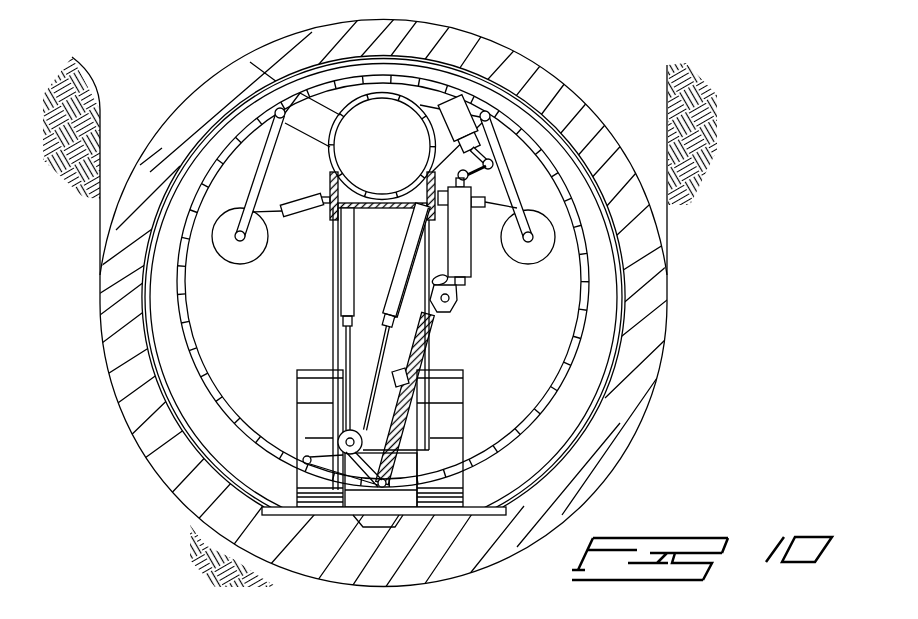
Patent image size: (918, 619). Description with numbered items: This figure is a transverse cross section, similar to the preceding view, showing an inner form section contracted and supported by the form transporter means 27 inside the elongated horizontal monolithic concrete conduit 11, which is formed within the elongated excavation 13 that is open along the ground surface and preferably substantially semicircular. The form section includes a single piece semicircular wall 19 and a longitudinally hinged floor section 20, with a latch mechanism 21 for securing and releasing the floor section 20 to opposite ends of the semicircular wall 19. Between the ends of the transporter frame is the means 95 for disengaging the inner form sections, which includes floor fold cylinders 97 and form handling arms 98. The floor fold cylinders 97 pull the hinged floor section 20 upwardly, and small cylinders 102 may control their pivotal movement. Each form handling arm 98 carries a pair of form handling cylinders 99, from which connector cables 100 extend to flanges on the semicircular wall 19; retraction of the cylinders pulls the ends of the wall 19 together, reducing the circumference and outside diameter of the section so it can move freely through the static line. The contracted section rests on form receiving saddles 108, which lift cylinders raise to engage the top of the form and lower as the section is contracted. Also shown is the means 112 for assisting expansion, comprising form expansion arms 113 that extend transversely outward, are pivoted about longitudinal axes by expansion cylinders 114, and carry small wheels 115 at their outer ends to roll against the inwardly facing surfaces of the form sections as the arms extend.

The elongated horizontal monolithic concrete conduit 11 is at (498, 62).
The elongated excavation 13 is at (102, 134).
The semicircular wall 19 is at (192, 320).
The hinged floor section 20 is at (427, 343).
The latch mechanism 21 is at (458, 298).
The form transporter means 27 is at (330, 257).
The means for disengaging the inner form sections 95 is at (330, 297).
The floor fold cylinders 97 is at (462, 257).
The form handling arms 98 is at (352, 340).
The form handling cylinders 99 is at (411, 233).
The connector cables 100 is at (381, 350).
The small cylinders 102 is at (433, 143).
The form receiving saddles 108 is at (402, 85).
The means for assisting expansion of the individual form sections 112 is at (513, 182).
The form expansion arms 113 is at (263, 165).
The expansion cylinders 114 is at (313, 212).
The small wheels 115 is at (253, 258).